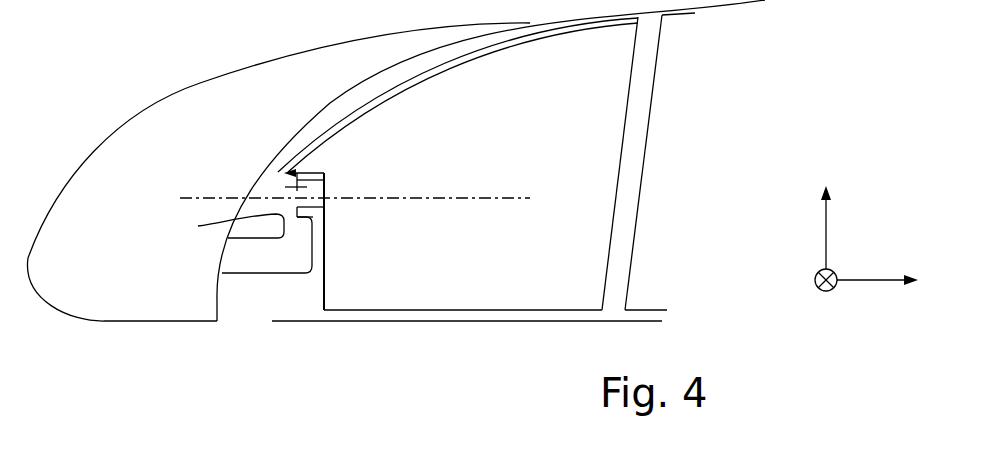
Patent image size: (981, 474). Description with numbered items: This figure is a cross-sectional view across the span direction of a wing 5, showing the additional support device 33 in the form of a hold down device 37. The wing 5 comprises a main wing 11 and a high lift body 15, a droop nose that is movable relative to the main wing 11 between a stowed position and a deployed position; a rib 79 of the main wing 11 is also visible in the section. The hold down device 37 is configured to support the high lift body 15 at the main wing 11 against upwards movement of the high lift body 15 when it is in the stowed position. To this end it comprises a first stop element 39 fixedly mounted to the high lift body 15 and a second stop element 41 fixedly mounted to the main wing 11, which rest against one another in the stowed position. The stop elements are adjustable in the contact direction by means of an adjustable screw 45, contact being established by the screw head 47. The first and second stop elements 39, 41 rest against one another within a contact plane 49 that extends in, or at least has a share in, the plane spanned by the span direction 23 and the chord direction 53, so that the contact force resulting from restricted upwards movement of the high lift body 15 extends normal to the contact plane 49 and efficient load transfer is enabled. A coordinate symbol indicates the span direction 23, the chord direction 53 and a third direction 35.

The wing 5 is at (108, 76).
The high lift body 15 is at (127, 201).
The main wing 11 is at (710, 196).
The rib 79 is at (598, 122).
The second stop element 41 is at (308, 163).
The adjustable screw 45 is at (324, 173).
The screw head 47 is at (304, 189).
The additional support device 33 is at (412, 241).
The hold down device 37 is at (298, 258).
The first stop element 39 is at (222, 225).
The contact plane 49 is at (487, 200).
The span direction 23 is at (821, 293).
The vertical direction 35 is at (832, 222).
The chord direction 53 is at (880, 284).